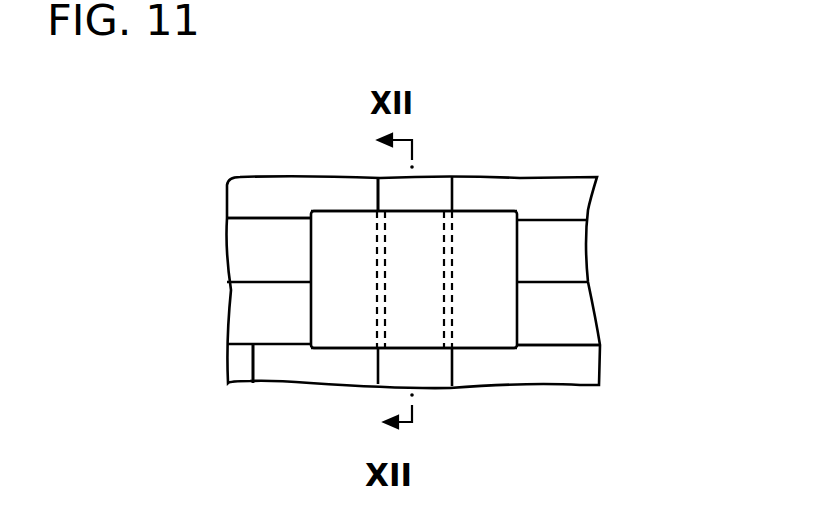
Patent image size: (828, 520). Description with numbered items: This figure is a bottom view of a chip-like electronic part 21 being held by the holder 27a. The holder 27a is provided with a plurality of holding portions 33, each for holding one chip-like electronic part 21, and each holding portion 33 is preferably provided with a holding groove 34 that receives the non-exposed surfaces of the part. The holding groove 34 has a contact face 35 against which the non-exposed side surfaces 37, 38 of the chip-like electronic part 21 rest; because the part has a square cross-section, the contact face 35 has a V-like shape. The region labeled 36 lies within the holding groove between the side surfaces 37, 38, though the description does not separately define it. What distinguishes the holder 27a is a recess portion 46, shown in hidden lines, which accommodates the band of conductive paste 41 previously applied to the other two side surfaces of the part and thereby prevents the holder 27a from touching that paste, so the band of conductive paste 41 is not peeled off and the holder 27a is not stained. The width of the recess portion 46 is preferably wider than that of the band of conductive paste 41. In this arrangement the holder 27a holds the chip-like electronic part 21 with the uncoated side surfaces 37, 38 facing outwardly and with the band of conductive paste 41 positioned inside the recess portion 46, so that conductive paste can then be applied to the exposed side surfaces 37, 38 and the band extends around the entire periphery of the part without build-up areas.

The chip-like electronic part 21 is at (300, 238).
The holder 27a is at (511, 148).
The holding portion 33 is at (278, 186).
The holding groove 34 is at (246, 385).
The contact face 35 is at (543, 333).
The plate 36 is at (504, 280).
The side surface 37 is at (495, 242).
The side surface 38 is at (498, 315).
The band of conductive paste 41 is at (378, 310).
The recess portion 46 is at (450, 307).